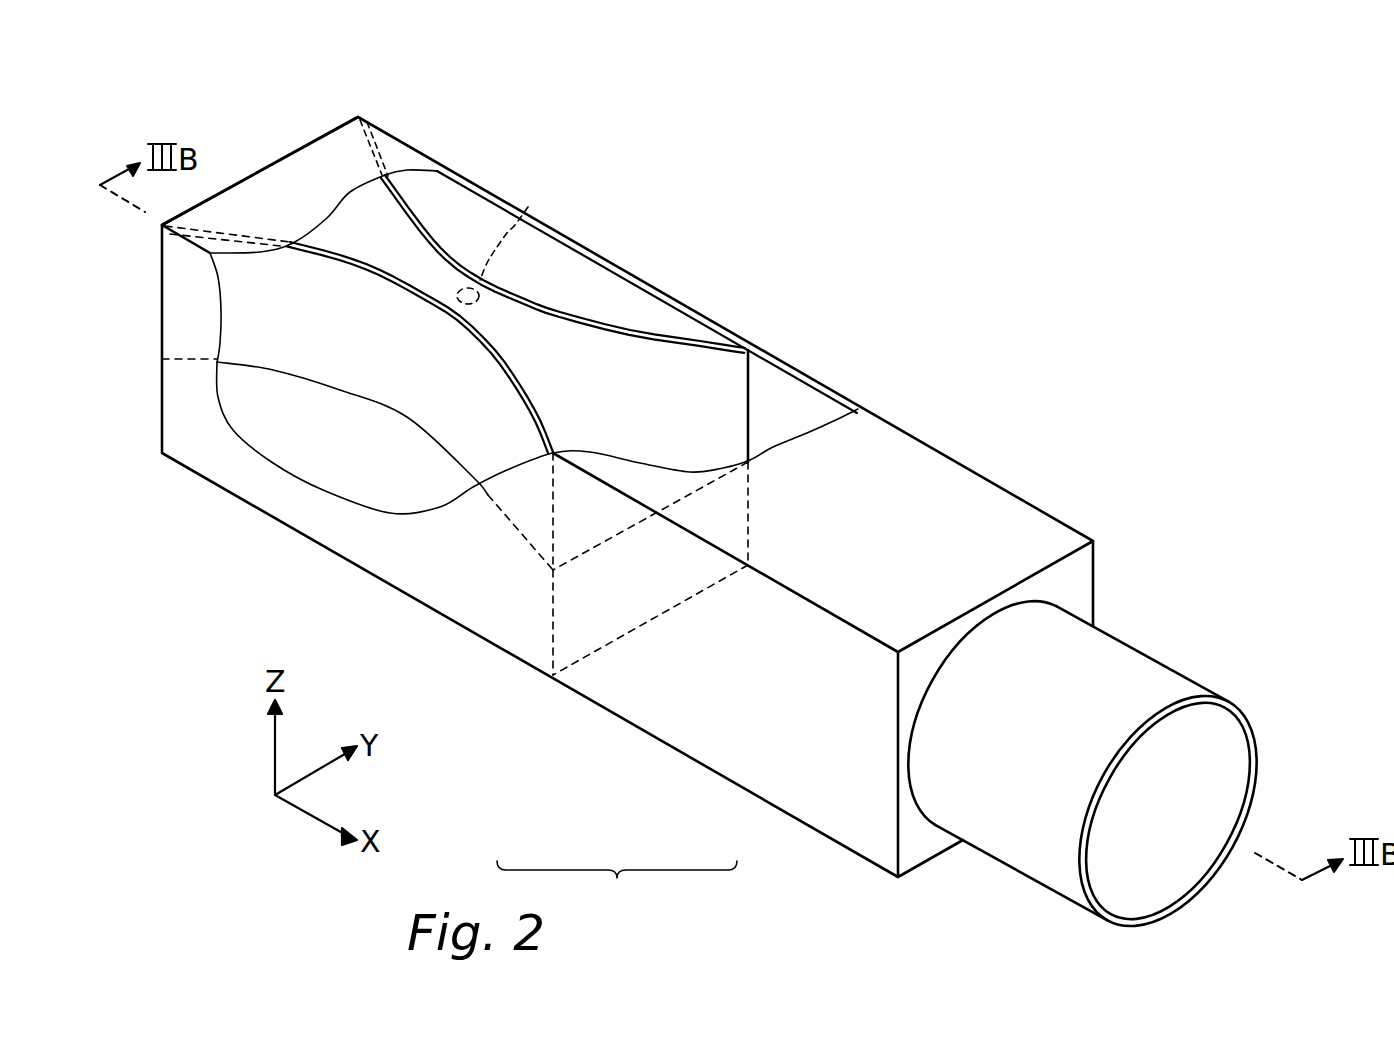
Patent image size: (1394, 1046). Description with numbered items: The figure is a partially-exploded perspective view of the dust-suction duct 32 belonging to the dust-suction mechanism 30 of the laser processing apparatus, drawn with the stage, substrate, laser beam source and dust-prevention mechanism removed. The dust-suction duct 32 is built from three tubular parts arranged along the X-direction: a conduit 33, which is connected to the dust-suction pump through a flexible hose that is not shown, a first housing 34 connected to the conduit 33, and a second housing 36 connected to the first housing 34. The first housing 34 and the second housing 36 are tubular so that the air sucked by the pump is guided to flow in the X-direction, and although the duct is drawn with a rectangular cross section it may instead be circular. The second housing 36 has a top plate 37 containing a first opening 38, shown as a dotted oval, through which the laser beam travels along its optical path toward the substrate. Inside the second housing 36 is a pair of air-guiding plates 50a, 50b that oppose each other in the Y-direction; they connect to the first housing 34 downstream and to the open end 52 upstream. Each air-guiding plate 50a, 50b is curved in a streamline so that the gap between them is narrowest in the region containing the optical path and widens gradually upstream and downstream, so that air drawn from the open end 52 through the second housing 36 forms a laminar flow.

The dust-suction mechanism 30 is at (718, 248).
The dust-suction duct 32 is at (617, 891).
The conduit 33 is at (1010, 870).
The first housing 34 is at (677, 755).
The second housing 36 is at (425, 547).
The top plate 37 is at (405, 157).
The first opening 38 is at (528, 207).
The air-guiding plate 50a is at (423, 263).
The air-guiding plate 50b is at (285, 310).
The open end 52 is at (276, 150).